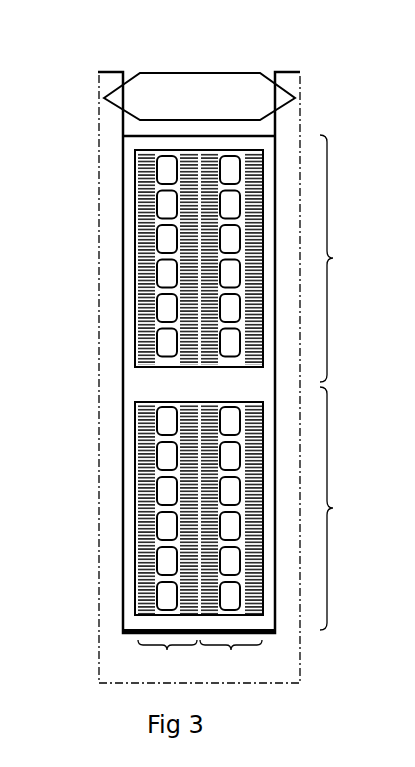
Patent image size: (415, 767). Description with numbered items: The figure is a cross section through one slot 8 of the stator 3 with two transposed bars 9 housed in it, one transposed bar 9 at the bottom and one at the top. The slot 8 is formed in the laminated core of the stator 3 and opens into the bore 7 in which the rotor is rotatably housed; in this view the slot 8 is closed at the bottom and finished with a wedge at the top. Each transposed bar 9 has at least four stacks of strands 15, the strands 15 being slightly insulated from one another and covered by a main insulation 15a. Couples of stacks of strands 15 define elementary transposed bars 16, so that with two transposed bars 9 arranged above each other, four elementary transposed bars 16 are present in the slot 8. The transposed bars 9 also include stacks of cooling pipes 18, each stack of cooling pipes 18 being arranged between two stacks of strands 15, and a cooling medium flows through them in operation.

The stator 3 is at (100, 664).
The bore 7 is at (285, 72).
The slot 8 is at (118, 128).
The transposed bar 9 is at (336, 382).
The strands 15 is at (205, 332).
The main insulation 15a is at (135, 158).
The elementary transposed bar 16 is at (200, 658).
The cooling pipes 18 is at (233, 458).